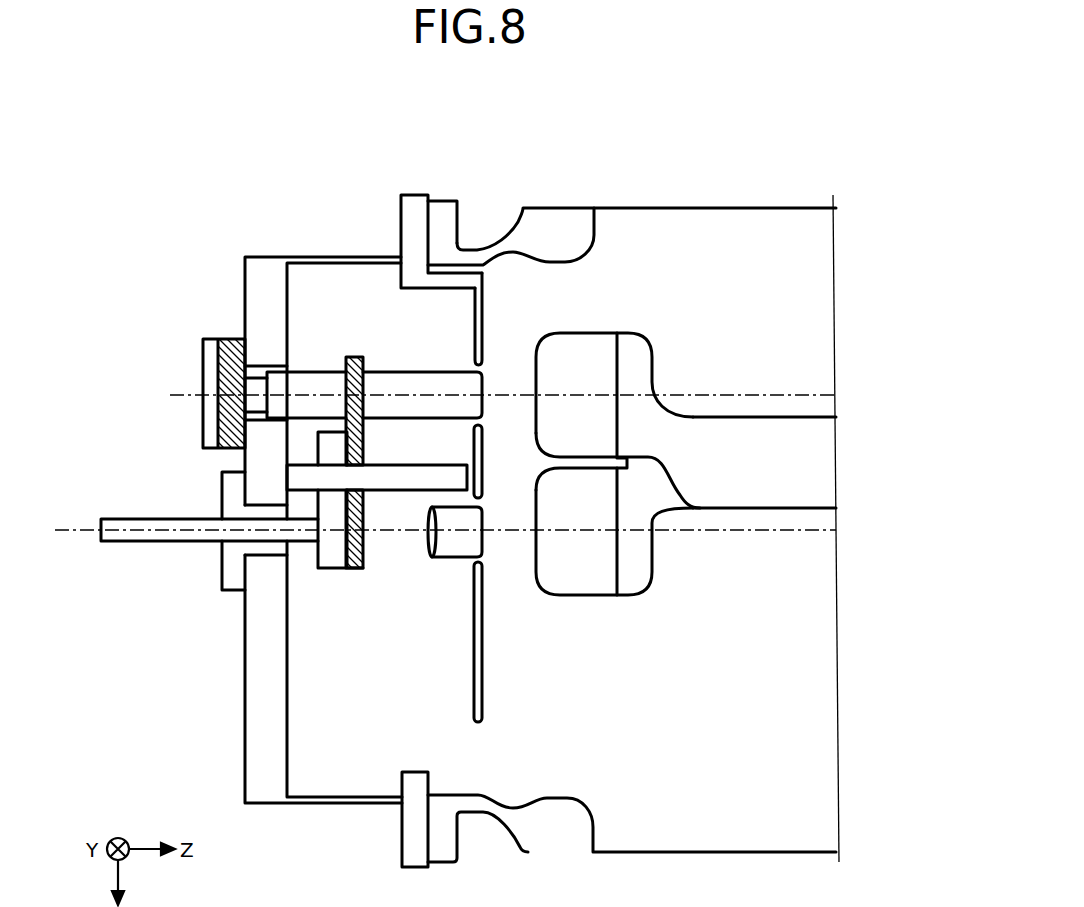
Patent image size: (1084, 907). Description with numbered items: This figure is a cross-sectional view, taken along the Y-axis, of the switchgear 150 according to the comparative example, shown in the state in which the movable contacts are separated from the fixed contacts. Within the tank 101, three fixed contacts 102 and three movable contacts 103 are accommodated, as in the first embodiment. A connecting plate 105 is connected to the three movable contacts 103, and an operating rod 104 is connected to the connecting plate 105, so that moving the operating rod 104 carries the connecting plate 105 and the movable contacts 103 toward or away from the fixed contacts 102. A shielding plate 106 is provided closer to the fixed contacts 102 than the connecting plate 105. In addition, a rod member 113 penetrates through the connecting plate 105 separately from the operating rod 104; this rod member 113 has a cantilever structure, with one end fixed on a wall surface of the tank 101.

The tank 101 is at (443, 210).
The fixed contact 102 is at (580, 333).
The movable contact 103 is at (418, 372).
The operating rod 104 is at (158, 519).
The connecting plate 105 is at (350, 357).
The shielding plate 106 is at (483, 688).
The rod member 113 is at (395, 490).
The switchgear 150 is at (666, 174).